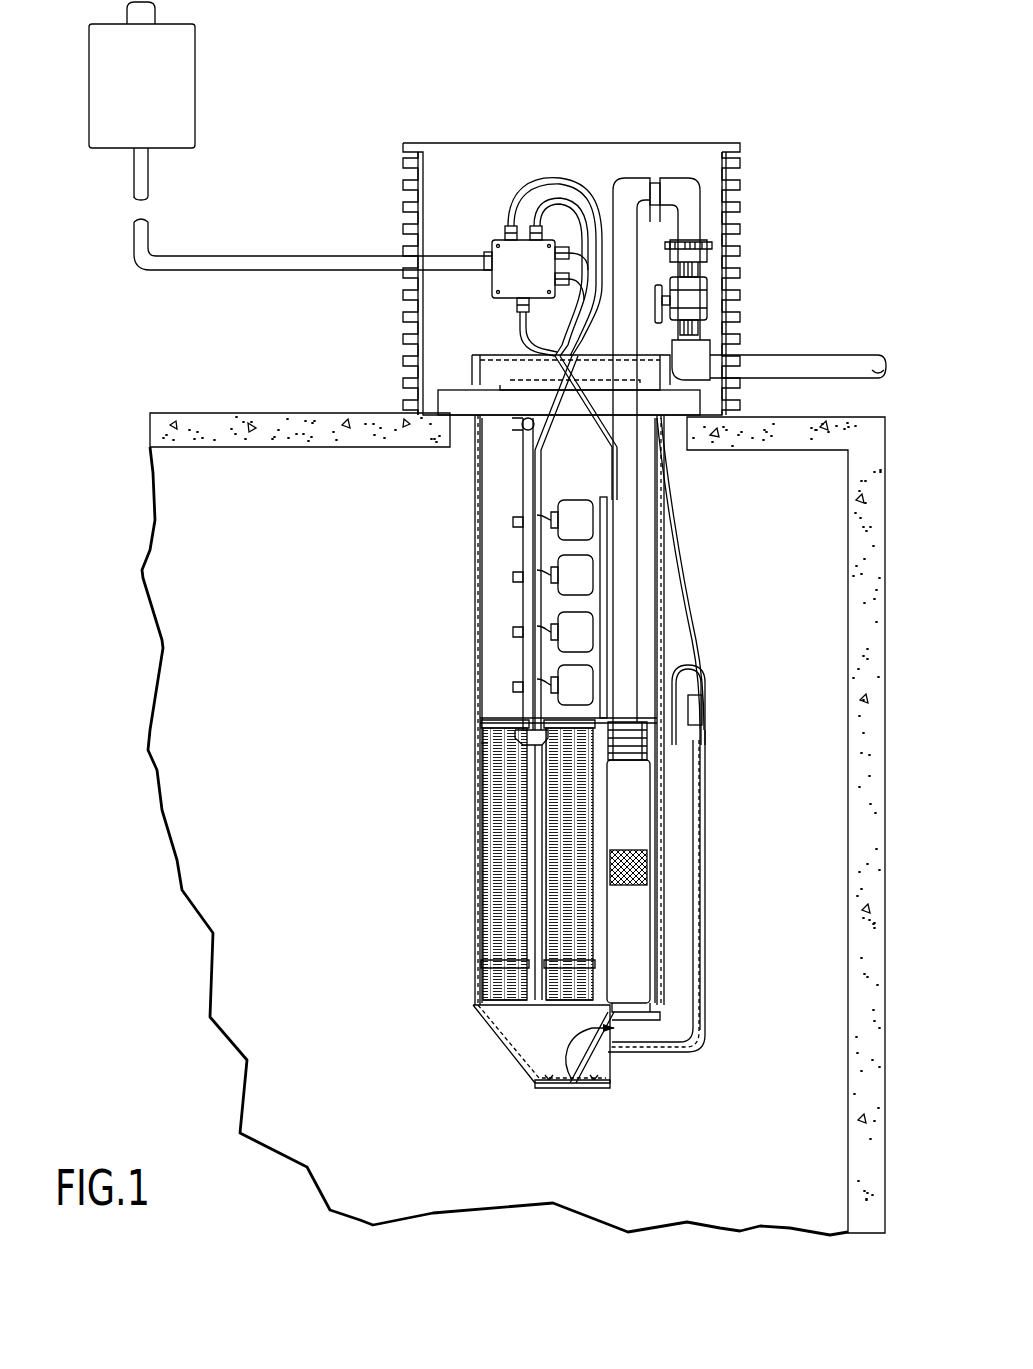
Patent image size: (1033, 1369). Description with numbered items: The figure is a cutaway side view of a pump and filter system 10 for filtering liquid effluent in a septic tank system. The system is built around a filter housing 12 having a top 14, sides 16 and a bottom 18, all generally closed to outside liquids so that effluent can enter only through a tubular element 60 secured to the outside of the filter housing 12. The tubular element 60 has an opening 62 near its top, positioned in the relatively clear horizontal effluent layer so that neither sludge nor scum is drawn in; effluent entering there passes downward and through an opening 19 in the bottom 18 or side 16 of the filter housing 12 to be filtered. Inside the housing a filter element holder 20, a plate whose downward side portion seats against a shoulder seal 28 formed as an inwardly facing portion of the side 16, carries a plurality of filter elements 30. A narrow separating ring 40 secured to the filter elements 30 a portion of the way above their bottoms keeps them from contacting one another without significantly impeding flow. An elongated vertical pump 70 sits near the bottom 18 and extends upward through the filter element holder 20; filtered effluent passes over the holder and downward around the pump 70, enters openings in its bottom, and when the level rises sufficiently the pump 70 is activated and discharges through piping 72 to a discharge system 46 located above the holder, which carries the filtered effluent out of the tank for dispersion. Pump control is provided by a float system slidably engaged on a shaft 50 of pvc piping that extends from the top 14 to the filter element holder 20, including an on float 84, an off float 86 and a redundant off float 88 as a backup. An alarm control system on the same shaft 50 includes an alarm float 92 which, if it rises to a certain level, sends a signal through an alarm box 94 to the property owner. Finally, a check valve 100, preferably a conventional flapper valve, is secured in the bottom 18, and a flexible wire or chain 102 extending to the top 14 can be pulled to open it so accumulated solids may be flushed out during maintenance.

The pump and filter system 10 is at (290, 633).
The filter housing 12 is at (665, 538).
The top 14 is at (480, 357).
The sides 16 is at (476, 565).
The bottom 18 is at (560, 1088).
The opening 19 is at (600, 1066).
The filter element holder 20 is at (497, 718).
The shoulder seal 28 is at (480, 742).
The filter elements 30 is at (490, 856).
The separating ring 40 is at (487, 963).
The discharge system 46 is at (685, 202).
The shaft 50 is at (523, 468).
The tubular element 60 is at (706, 821).
The opening 62 is at (706, 704).
The pump 70 is at (627, 800).
The piping 72 is at (627, 580).
The on float 84 is at (545, 585).
The off float 86 is at (580, 633).
The redundant off float 88 is at (580, 682).
The alarm float 92 is at (575, 518).
The alarm box 94 is at (492, 262).
The check valve 100 is at (578, 1090).
The flexible wire or chain 102 is at (692, 917).